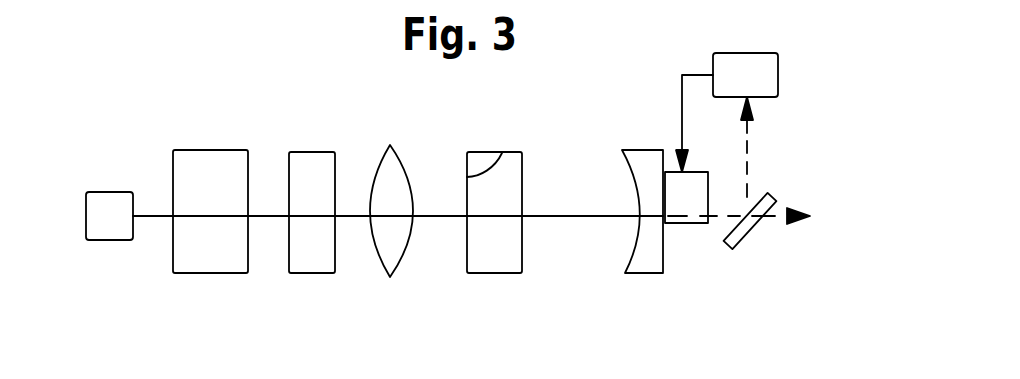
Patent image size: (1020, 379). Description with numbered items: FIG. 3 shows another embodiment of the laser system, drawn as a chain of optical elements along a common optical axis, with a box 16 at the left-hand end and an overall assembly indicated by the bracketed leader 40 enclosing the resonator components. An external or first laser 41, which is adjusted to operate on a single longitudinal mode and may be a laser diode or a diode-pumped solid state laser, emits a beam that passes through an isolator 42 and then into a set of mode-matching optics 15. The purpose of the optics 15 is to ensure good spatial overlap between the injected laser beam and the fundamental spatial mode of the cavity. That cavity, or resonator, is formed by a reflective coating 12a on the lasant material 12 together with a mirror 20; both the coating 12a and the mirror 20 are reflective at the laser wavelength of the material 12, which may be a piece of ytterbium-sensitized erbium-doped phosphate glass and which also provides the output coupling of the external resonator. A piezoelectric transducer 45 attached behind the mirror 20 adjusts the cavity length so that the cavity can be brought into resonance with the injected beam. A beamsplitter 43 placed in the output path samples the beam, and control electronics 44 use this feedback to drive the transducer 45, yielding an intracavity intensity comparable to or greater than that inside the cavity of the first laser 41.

The light source 16 is at (113, 237).
The first laser 41 is at (217, 274).
The isolator 42 is at (313, 274).
The optics 15 is at (405, 260).
The lasant material 12 is at (483, 262).
The reflective coating 12a is at (502, 153).
The mirror 20 is at (645, 260).
The piezoelectric transducer 45 is at (697, 222).
The beamsplitter 43 is at (738, 235).
The control electronics 44 is at (742, 63).
The optical assembly 40 is at (503, 326).